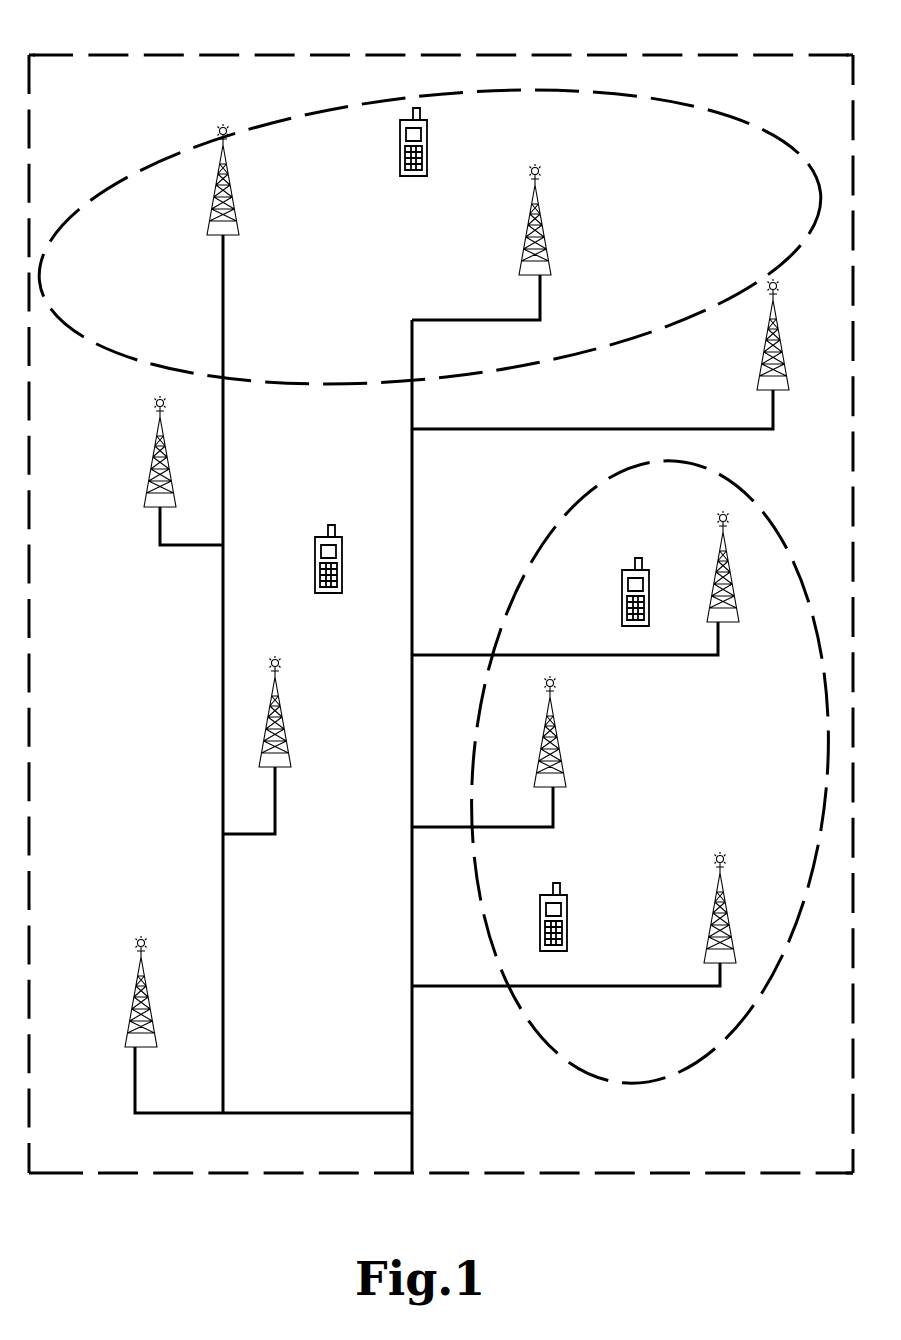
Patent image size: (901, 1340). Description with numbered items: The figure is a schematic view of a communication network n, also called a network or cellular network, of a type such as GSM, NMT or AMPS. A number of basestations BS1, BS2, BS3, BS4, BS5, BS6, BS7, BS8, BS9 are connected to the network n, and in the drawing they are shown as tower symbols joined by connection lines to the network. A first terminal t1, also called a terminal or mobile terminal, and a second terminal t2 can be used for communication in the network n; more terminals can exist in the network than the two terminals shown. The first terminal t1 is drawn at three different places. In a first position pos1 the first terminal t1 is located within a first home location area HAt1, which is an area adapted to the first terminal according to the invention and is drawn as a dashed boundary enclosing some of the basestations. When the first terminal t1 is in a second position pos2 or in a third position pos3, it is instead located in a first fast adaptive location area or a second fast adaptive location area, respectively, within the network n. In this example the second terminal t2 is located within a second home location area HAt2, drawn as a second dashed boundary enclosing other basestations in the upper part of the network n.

The communication network n is at (124, 54).
The basestation BS1 is at (728, 908).
The basestation BS2 is at (557, 733).
The basestation BS3 is at (730, 578).
The basestation BS4 is at (541, 220).
The basestation BS5 is at (228, 178).
The basestation BS6 is at (779, 340).
The basestation BS7 is at (152, 458).
The basestation BS8 is at (284, 740).
The basestation BS9 is at (148, 988).
The first terminal t1 is at (477, 751).
The second terminal t2 is at (399, 148).
The first position pos1 is at (621, 594).
The second position pos2 is at (314, 563).
The third position pos3 is at (539, 916).
The first home location area HAt1 is at (800, 1097).
The second home location area HAt2 is at (820, 110).